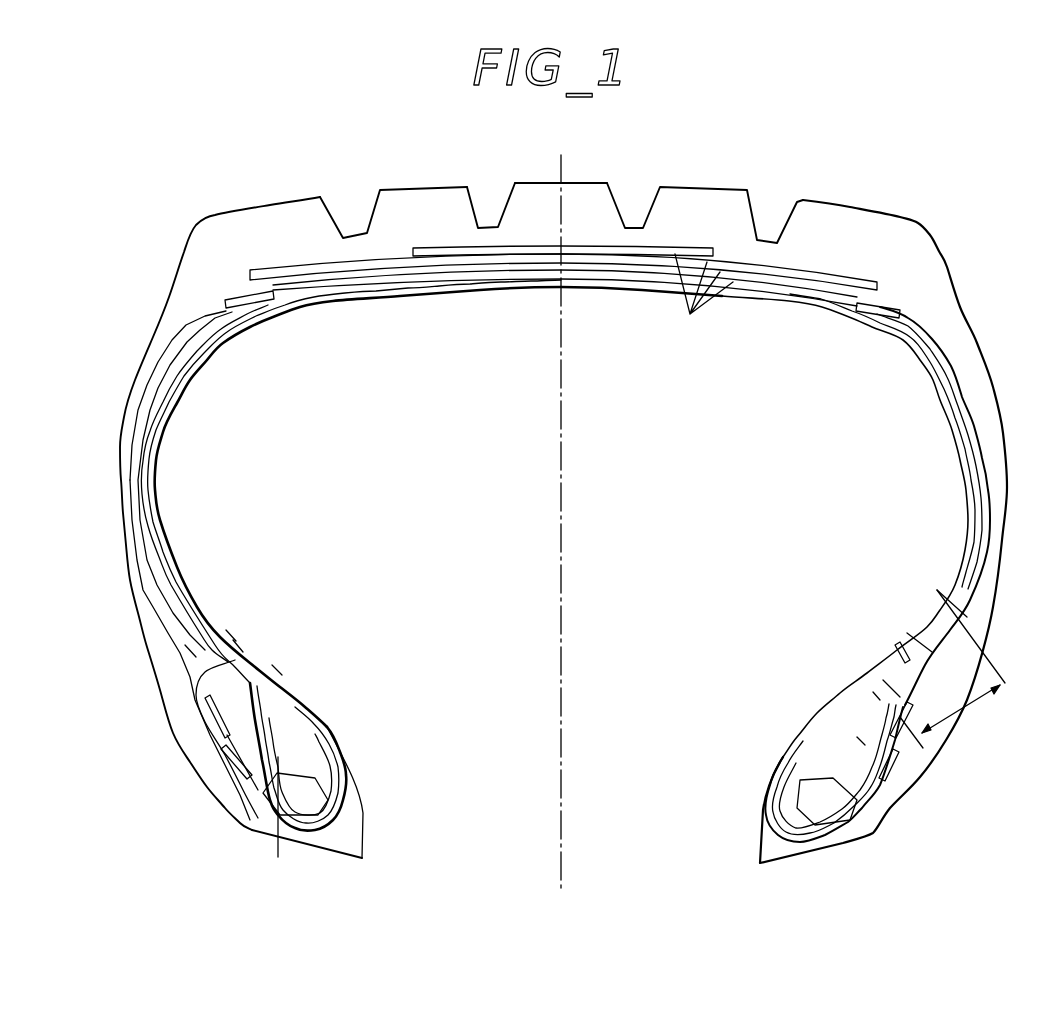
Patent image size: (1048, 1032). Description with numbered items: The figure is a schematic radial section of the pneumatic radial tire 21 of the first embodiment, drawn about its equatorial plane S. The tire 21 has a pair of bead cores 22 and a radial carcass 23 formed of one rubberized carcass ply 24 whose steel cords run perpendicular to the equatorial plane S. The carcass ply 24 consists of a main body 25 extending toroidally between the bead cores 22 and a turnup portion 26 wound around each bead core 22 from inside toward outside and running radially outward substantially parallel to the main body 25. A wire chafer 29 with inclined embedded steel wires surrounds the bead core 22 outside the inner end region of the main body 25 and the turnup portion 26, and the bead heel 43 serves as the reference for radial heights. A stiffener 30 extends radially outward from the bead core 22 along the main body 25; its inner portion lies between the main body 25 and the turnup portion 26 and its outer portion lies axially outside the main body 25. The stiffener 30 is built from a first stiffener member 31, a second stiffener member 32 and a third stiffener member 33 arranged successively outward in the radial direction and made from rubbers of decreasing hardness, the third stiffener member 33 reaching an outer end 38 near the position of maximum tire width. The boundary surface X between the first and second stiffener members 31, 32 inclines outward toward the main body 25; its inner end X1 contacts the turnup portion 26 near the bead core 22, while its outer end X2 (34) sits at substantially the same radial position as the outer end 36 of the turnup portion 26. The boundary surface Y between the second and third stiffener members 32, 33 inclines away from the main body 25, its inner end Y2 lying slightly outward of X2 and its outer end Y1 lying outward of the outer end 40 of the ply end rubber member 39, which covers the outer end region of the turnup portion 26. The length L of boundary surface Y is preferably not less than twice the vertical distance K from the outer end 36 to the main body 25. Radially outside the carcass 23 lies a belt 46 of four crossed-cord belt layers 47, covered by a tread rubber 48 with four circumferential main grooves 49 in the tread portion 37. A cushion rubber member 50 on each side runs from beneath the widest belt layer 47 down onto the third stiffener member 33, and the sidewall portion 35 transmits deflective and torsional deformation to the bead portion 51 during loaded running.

The tire 21 is at (960, 287).
The bead core 22 is at (310, 793).
The radial carcass 23 is at (246, 326).
The carcass ply 24 is at (172, 403).
The main body 25 is at (303, 698).
The turnup portion 26 is at (217, 787).
The wire chafer 29 is at (338, 807).
The stiffener 30 is at (293, 760).
The first stiffener member 31 is at (280, 824).
The second stiffener member 32 is at (240, 748).
The third stiffener member 33 is at (160, 592).
The outer end of the boundary surface X 34 is at (277, 670).
The sidewall portion 35 is at (119, 487).
The outer end of the turnup portion 36 is at (197, 696).
The tread portion 37 is at (716, 186).
The outer end of the third stiffener member 38 is at (138, 486).
The ply end rubber member 39 is at (204, 714).
The outer end of the ply end rubber member 40 is at (213, 645).
The bead heel 43 is at (248, 831).
The belt 46 is at (833, 268).
The belt layer 47 is at (690, 314).
The tread rubber 48 is at (600, 192).
The main groove 49 is at (479, 207).
The cushion rubber member 50 is at (185, 340).
The bead portion 51 is at (330, 727).
The equatorial plane S is at (567, 172).
The vertical distance K is at (190, 654).
The length of the boundary surface Y L is at (952, 669).
The boundary surface X is at (857, 737).
The inner end of the boundary surface X X1 is at (887, 787).
The outer end of the boundary surface X X2 is at (873, 692).
The boundary surface Y is at (907, 633).
The outer end of the boundary surface Y Y1 is at (937, 590).
The inner end of the boundary surface Y Y2 is at (883, 680).